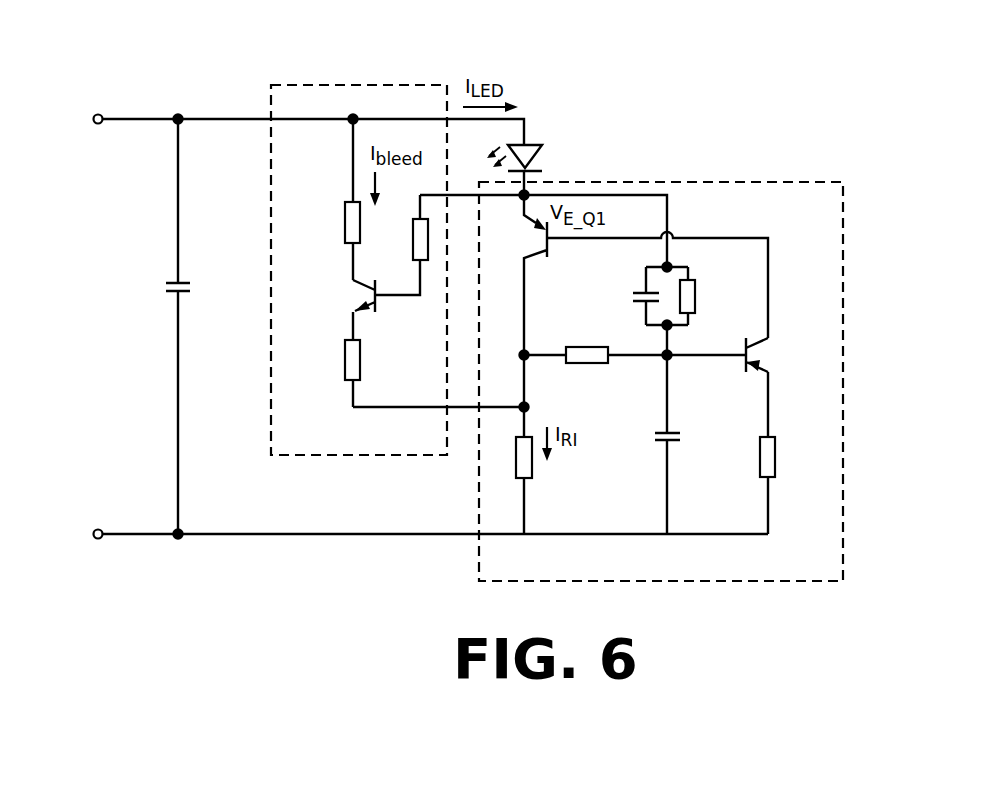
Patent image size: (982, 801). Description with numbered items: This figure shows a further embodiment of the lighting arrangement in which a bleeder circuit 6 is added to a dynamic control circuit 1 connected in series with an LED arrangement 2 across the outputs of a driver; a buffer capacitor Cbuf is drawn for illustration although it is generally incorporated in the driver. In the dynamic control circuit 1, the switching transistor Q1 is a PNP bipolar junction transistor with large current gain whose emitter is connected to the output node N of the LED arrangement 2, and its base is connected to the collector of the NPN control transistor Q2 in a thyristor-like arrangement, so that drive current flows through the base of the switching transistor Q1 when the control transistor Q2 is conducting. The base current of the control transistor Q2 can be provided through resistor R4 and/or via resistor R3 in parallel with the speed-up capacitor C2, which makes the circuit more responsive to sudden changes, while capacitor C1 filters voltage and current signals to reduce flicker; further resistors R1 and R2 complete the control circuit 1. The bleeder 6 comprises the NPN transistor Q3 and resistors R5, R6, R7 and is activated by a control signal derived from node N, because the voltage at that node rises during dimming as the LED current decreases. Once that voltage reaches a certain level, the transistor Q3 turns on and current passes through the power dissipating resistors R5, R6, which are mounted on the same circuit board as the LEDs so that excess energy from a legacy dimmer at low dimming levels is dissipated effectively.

The bleeder circuit 6 is at (401, 85).
The dynamic control circuit 1 is at (785, 182).
The LED arrangement 2 is at (540, 150).
The output node N is at (530, 191).
The buffer capacitor Cbuf is at (190, 287).
The resistor R1 is at (532, 465).
The resistor R2 is at (775, 455).
The resistor R3 is at (695, 305).
The resistor R4 is at (588, 363).
The power dissipating resistor R5 is at (345, 360).
The power dissipating resistor R6 is at (345, 228).
The resistor R7 is at (413, 252).
The switching transistor Q1 is at (536, 240).
The control transistor Q2 is at (765, 357).
The transistor Q3 is at (380, 302).
The capacitor C1 is at (680, 437).
The speed-up capacitor C2 is at (642, 296).